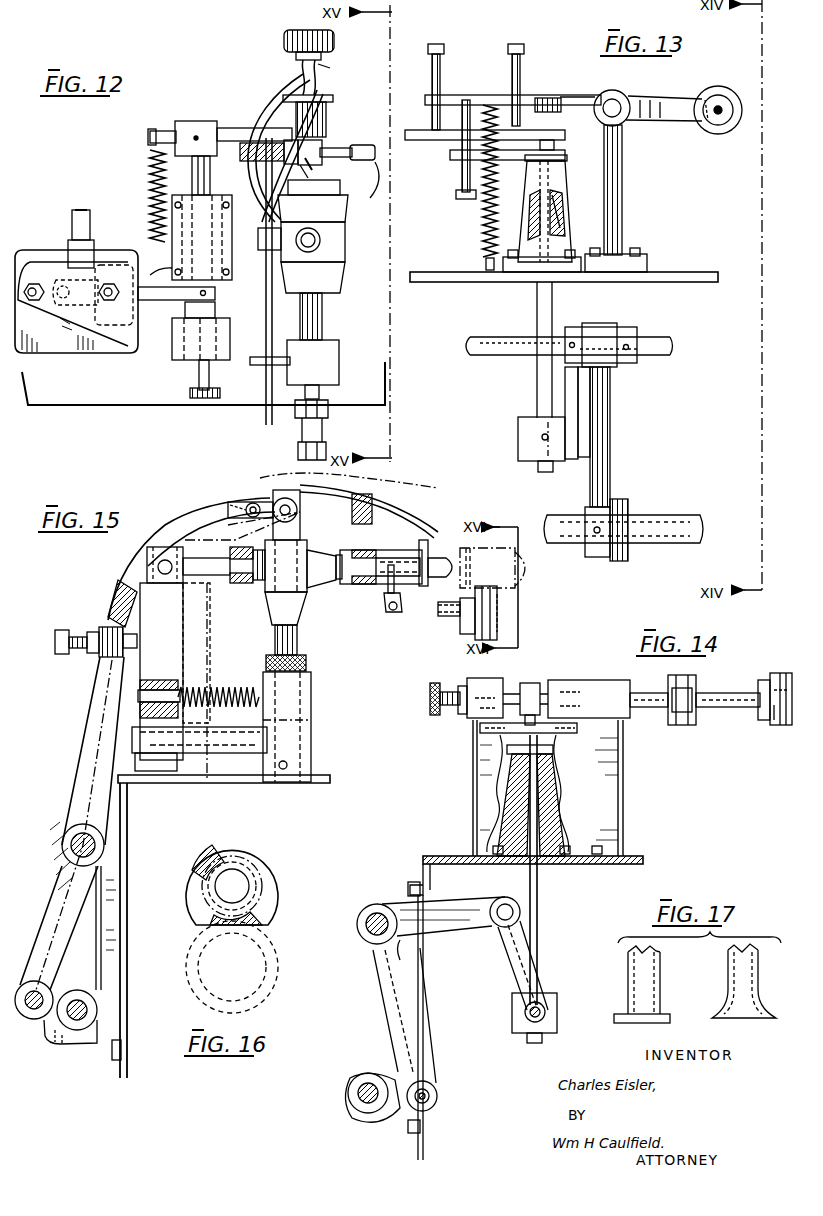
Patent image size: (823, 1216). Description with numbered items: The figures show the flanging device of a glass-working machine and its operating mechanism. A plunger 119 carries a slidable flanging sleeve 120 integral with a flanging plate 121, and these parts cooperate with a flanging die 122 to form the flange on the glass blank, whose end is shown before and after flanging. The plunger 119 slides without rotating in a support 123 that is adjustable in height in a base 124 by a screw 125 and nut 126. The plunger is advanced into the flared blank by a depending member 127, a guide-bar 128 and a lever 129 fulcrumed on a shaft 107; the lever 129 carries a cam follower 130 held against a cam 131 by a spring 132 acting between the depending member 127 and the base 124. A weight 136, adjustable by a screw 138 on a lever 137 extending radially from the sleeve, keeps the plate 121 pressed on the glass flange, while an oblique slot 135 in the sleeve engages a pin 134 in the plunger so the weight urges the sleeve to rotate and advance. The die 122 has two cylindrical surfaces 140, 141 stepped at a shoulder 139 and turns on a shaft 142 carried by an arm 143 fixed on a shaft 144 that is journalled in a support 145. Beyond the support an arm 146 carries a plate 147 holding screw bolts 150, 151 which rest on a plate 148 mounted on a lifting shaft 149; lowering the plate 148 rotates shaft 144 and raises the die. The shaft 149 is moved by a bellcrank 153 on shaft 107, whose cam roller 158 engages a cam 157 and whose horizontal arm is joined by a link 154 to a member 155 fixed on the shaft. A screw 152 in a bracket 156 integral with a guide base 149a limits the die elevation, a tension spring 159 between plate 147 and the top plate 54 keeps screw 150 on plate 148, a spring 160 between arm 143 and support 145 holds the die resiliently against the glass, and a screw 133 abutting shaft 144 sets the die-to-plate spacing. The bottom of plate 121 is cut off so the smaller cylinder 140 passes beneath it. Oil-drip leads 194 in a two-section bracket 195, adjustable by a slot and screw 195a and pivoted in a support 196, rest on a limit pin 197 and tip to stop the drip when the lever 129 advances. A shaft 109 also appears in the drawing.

In FIG. 13, the top plate 54 is at (690, 278).
In FIG. 15, the top plate 54 is at (318, 784).
In FIG. 14, the top plate 54 is at (458, 860).
In FIG. 13, the shaft 107 is at (666, 342).
In FIG. 15, the shaft 107 is at (62, 840).
In FIG. 14, the shaft 107 is at (380, 904).
In FIG. 13, the shaft 109 is at (686, 514).
In FIG. 15, the shaft 109 is at (84, 1002).
In FIG. 14, the shaft 109 is at (358, 1092).
In FIG. 12, the plunger 119 is at (300, 72).
In FIG. 15, the plunger 119 is at (436, 560).
In FIG. 16, the plunger 119 is at (244, 884).
In FIG. 12, the flanging sleeve 120 is at (326, 118).
In FIG. 15, the flanging sleeve 120 is at (400, 548).
In FIG. 16, the flanging sleeve 120 is at (264, 900).
In FIG. 12, the flanging plate 121 is at (333, 98).
In FIG. 15, the flanging plate 121 is at (426, 586).
In FIG. 16, the flanging plate 121 is at (262, 890).
In FIG. 12, the flanging die 122 is at (284, 42).
In FIG. 13, the flanging die 122 is at (720, 88).
In FIG. 15, the flanging die 122 is at (478, 636).
In FIG. 16, the flanging die 122 is at (268, 992).
In FIG. 14, the flanging die 122 is at (790, 728).
In FIG. 12, the support 123 is at (346, 242).
In FIG. 15, the support 123 is at (264, 594).
In FIG. 12, the base 124 is at (338, 340).
In FIG. 15, the base 124 is at (310, 690).
In FIG. 15, the screw 125 is at (298, 638).
In FIG. 15, the nut 126 is at (306, 660).
In FIG. 15, the depending member 127 is at (178, 616).
In FIG. 15, the guide-bar 128 is at (250, 756).
In FIG. 15, the lever 129 is at (90, 720).
In FIG. 15, the cam follower 130 is at (30, 1020).
In FIG. 15, the cam 131 is at (60, 1046).
In FIG. 15, the spring 132 is at (246, 690).
In FIG. 12, the screw 133 is at (190, 393).
In FIG. 14, the screw 133 is at (425, 704).
In FIG. 12, the pin 134 is at (318, 176).
In FIG. 15, the pin 134 is at (366, 546).
In FIG. 12, the oblique slot 135 is at (322, 166).
In FIG. 15, the oblique slot 135 is at (372, 550).
In FIG. 12, the weight 136 is at (370, 142).
In FIG. 15, the weight 136 is at (384, 602).
In FIG. 12, the lever 137 is at (320, 152).
In FIG. 15, the lever 137 is at (378, 590).
In FIG. 12, the screw 138 is at (368, 184).
In FIG. 15, the screw 138 is at (388, 610).
In FIG. 15, the shoulder 139 is at (488, 640).
In FIG. 14, the shoulder 139 is at (770, 724).
In FIG. 14, the cylindrical surface 140 is at (760, 680).
In FIG. 14, the cylindrical surface 141 is at (786, 673).
In FIG. 12, the shaft 142 is at (336, 65).
In FIG. 13, the shaft 142 is at (716, 133).
In FIG. 15, the shaft 142 is at (440, 616).
In FIG. 14, the shaft 142 is at (744, 694).
In FIG. 12, the arm 143 is at (217, 128).
In FIG. 13, the arm 143 is at (652, 124).
In FIG. 14, the arm 143 is at (674, 726).
In FIG. 12, the shaft 144 is at (214, 170).
In FIG. 13, the shaft 144 is at (612, 92).
In FIG. 14, the shaft 144 is at (648, 692).
In FIG. 12, the support 145 is at (184, 194).
In FIG. 14, the support 145 is at (612, 678).
In FIG. 12, the arm 146 is at (216, 293).
In FIG. 13, the arm 146 is at (594, 95).
In FIG. 12, the plate 147 is at (136, 250).
In FIG. 13, the plate 147 is at (474, 97).
In FIG. 12, the plate 148 is at (172, 322).
In FIG. 13, the plate 148 is at (565, 152).
In FIG. 14, the plate 148 is at (498, 732).
In FIG. 13, the lifting shaft 149 is at (550, 216).
In FIG. 14, the lifting shaft 149 is at (538, 916).
In FIG. 13, the guide base 149a is at (560, 198).
In FIG. 13, the screw bolt 150 is at (442, 74).
In FIG. 13, the screw bolt 151 is at (522, 74).
In FIG. 13, the screw 152 is at (460, 182).
In FIG. 13, the bellcrank 153 is at (608, 412).
In FIG. 14, the bellcrank 153 is at (372, 950).
In FIG. 13, the link 154 is at (576, 398).
In FIG. 14, the link 154 is at (506, 988).
In FIG. 13, the member 155 is at (530, 445).
In FIG. 14, the member 155 is at (572, 990).
In FIG. 13, the bracket 156 is at (533, 166).
In FIG. 13, the cam 157 is at (628, 513).
In FIG. 14, the cam 157 is at (358, 1122).
In FIG. 13, the cam roller 158 is at (628, 552).
In FIG. 14, the cam roller 158 is at (437, 1094).
In FIG. 12, the tension spring 159 is at (74, 213).
In FIG. 13, the tension spring 159 is at (482, 232).
In FIG. 12, the spring 160 is at (147, 204).
In FIG. 12, the leads 194 is at (322, 86).
In FIG. 15, the leads 194 is at (418, 512).
In FIG. 12, the bracket 195 is at (268, 328).
In FIG. 15, the bracket 195 is at (228, 504).
In FIG. 15, the slot and screw 195a is at (226, 504).
In FIG. 15, the support 196 is at (276, 496).
In FIG. 12, the limit pin 197 is at (262, 357).
In FIG. 15, the limit pin 197 is at (147, 566).